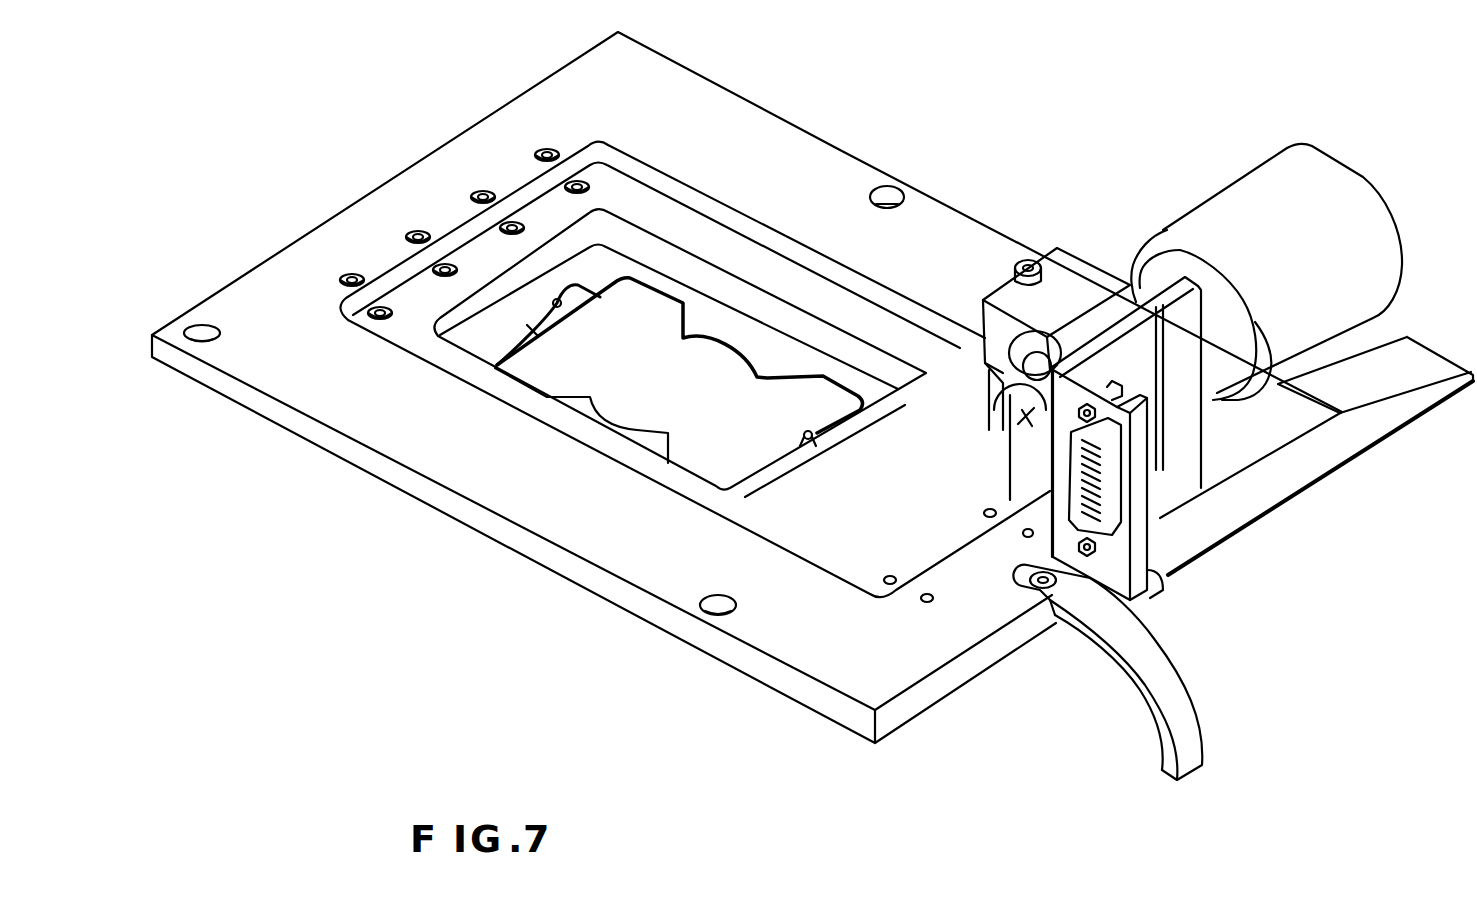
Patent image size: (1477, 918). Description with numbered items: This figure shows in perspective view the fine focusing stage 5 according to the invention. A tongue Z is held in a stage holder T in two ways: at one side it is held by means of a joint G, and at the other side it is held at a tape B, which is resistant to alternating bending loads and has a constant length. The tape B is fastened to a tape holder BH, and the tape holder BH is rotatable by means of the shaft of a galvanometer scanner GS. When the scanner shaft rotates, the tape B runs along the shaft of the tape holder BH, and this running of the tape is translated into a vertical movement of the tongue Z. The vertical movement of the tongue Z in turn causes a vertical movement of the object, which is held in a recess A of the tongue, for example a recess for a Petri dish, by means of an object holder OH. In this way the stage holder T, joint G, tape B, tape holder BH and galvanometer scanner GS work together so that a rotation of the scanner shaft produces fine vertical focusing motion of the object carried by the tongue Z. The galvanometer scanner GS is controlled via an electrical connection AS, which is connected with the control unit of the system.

The stage holder T is at (290, 263).
The fine focusing stage 5 is at (378, 425).
The joint G is at (533, 198).
The tongue Z is at (677, 217).
The recess A is at (722, 358).
The object holder OH is at (545, 338).
The tape holder BH is at (1007, 412).
The tape B is at (1008, 475).
The electrical connection AS is at (1107, 488).
The galvanometer scanner GS is at (1253, 197).